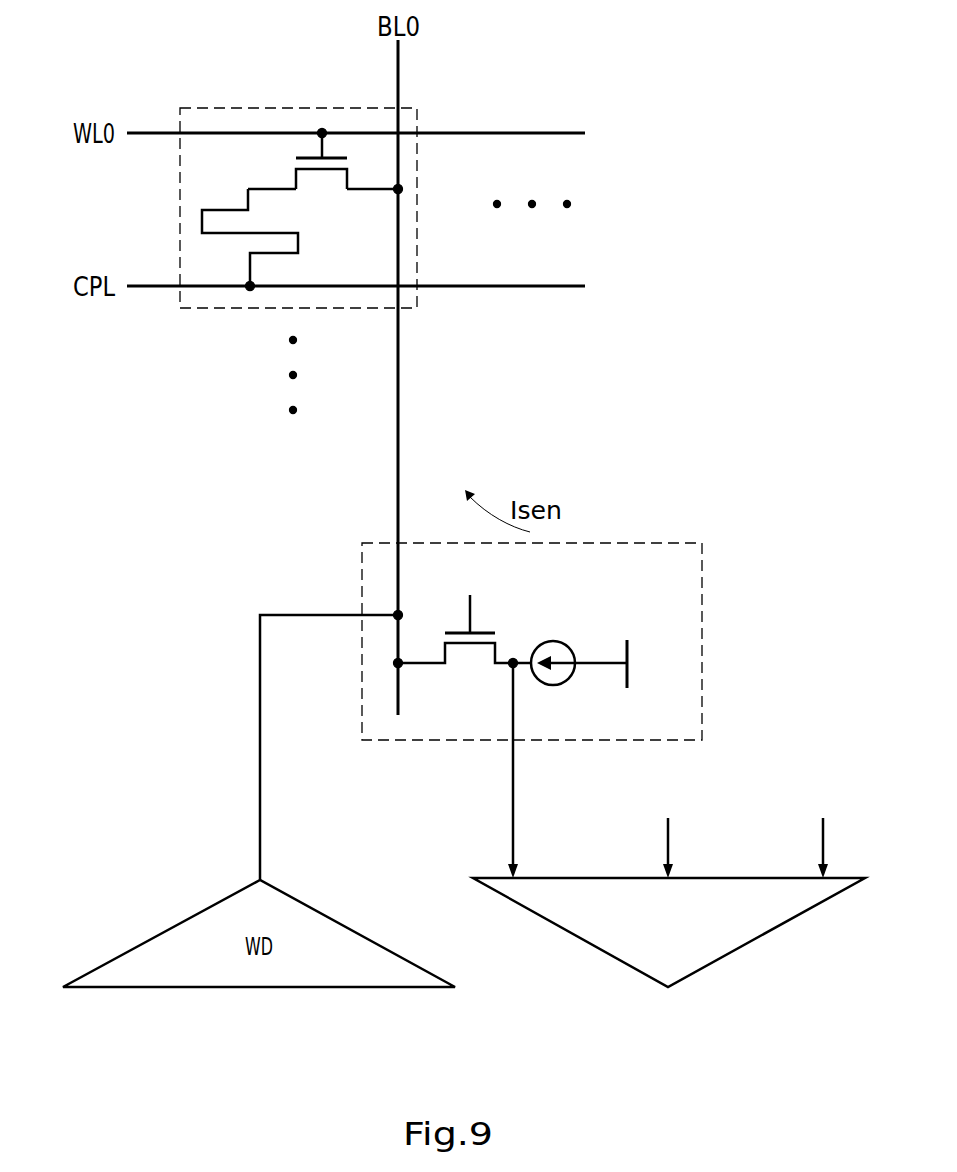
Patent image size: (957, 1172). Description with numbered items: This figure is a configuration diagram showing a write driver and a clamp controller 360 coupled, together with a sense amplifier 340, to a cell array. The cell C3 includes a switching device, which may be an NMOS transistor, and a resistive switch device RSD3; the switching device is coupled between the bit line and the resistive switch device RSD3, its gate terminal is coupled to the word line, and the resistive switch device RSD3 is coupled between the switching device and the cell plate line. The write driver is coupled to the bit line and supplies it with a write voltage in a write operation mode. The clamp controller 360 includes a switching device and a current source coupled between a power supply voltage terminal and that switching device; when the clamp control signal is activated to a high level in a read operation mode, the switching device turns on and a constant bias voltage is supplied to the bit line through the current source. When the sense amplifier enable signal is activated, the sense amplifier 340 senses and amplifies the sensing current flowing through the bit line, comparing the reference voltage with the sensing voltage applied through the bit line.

The clamp controller 360 is at (702, 601).
The sense amplifier 340 is at (772, 932).
The cell C3 is at (298, 164).
The resistive switch device RSD3 is at (382, 227).